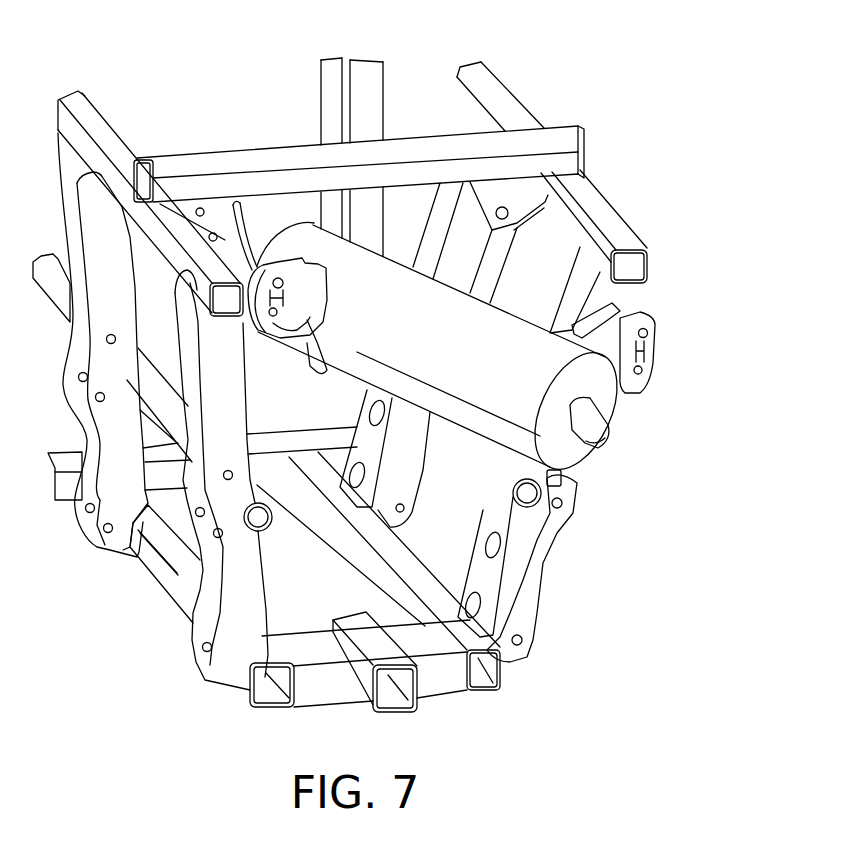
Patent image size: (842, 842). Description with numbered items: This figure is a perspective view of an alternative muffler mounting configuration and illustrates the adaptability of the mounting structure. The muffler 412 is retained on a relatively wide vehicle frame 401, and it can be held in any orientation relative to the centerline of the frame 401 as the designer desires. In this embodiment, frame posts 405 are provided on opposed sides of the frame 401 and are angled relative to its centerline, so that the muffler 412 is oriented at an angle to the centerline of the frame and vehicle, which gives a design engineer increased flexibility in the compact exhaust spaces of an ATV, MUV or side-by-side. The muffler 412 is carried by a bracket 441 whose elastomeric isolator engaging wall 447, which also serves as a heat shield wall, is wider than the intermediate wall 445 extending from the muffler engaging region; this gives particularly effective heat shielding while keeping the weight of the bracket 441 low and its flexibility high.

The vehicle frame 401 is at (606, 213).
The frame posts 405 is at (252, 262).
The muffler 412 is at (578, 455).
The bracket 441 is at (602, 300).
The intermediate wall 445 is at (590, 315).
The elastomeric isolator engaging wall 447 is at (613, 387).